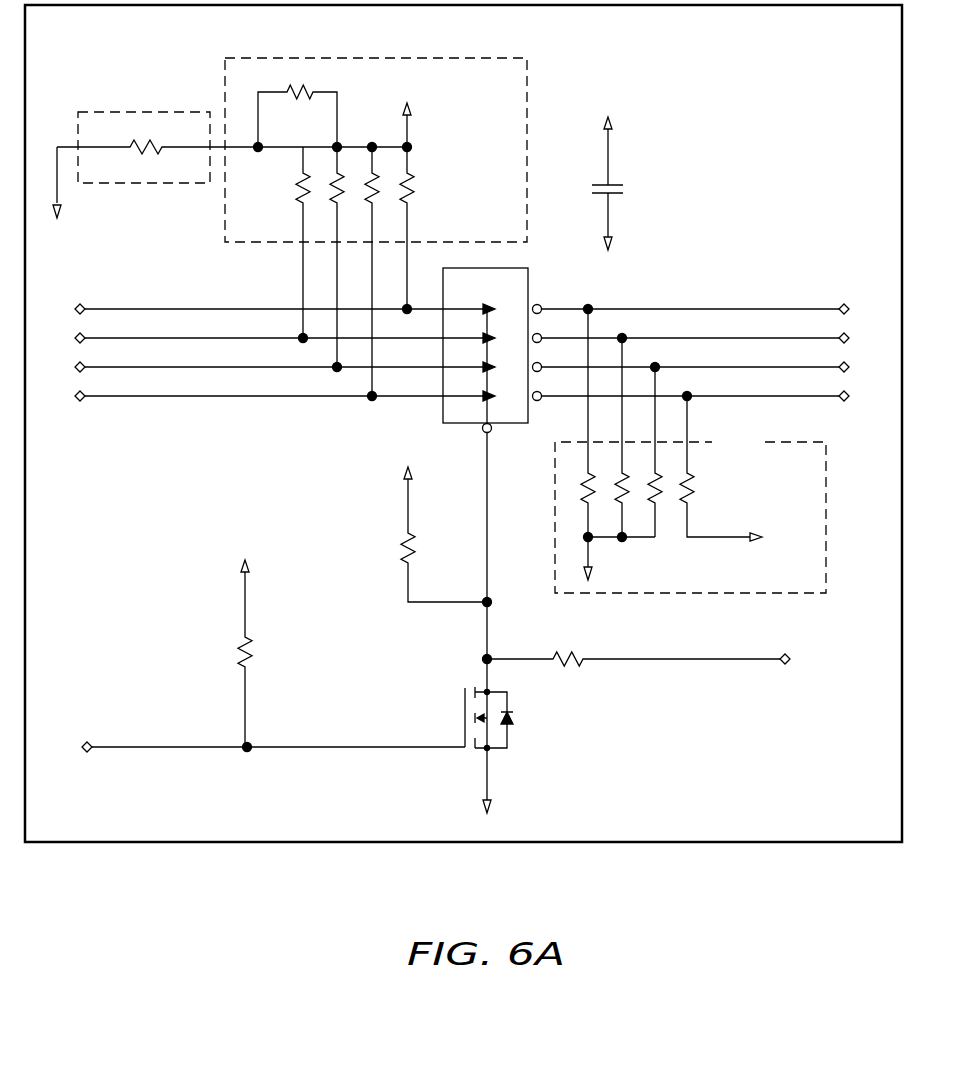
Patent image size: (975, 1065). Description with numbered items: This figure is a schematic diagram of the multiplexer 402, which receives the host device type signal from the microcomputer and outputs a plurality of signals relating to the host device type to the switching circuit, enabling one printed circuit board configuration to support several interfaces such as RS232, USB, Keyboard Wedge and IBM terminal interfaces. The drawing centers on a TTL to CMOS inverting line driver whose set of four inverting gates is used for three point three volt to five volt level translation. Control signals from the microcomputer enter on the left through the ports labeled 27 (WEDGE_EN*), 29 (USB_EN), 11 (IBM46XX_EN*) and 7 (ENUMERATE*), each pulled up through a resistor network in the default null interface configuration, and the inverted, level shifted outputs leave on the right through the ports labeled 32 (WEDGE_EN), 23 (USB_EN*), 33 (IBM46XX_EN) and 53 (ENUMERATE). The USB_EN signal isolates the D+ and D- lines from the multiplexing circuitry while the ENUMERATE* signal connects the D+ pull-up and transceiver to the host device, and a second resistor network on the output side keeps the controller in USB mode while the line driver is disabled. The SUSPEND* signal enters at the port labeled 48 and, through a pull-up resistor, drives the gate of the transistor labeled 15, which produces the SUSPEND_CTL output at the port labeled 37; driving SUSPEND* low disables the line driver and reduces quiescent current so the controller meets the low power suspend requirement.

The multiplexer 402 is at (463, 473).
The WEDGE_EN* input port 27 is at (279, 298).
The USB_EN input port 29 is at (279, 327).
The IBM46XX_EN* input port 11 is at (279, 356).
The ENUMERATE* input port 7 is at (279, 385).
The WEDGE_EN output port 32 is at (714, 302).
The USB_EN* output port 23 is at (714, 331).
The IBM46XX_EN output port 33 is at (714, 360).
The ENUMERATE output port 53 is at (714, 389).
The SUSPEND_CTL output port 37 is at (656, 648).
The MOSFET transistor 15 is at (523, 738).
The SUSPEND* input port 48 is at (273, 732).